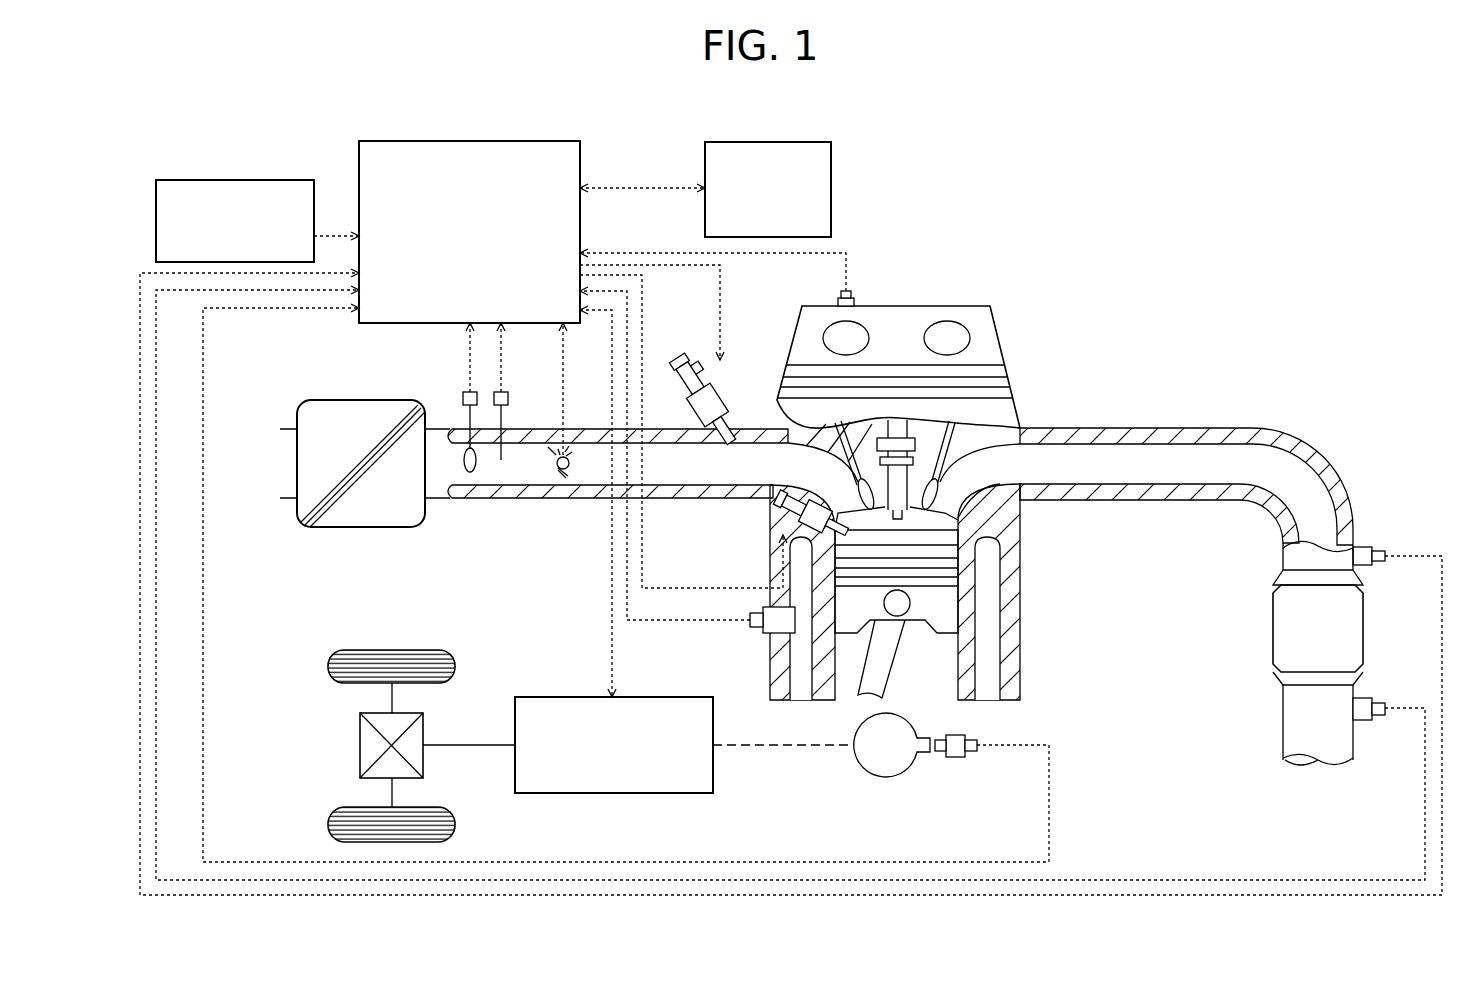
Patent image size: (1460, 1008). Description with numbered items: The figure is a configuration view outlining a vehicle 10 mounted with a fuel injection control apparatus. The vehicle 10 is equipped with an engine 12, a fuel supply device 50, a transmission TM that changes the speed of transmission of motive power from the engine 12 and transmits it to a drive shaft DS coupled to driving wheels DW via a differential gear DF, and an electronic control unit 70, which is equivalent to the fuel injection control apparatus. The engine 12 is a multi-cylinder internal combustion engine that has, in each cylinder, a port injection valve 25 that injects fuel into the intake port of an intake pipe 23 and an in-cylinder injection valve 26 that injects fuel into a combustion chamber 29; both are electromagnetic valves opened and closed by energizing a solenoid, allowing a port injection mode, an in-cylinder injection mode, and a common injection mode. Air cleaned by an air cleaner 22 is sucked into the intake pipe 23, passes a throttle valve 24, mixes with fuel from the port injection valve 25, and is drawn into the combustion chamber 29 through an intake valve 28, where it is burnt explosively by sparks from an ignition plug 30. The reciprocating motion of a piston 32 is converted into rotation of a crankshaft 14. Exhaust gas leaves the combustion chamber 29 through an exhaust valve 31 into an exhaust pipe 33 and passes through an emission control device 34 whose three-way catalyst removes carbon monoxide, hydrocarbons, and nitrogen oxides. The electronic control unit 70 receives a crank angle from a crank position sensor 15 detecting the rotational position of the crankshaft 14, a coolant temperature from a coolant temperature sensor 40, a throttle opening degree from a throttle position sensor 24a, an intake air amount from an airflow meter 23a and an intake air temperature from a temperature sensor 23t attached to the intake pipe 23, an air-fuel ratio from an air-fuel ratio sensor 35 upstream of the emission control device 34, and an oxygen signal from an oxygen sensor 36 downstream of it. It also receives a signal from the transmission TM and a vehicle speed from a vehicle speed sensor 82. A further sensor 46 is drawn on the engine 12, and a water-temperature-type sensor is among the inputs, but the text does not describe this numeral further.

The vehicle 10 is at (1188, 168).
The engine 12 is at (889, 473).
The crankshaft 14 is at (866, 766).
The crank position sensor 15 is at (956, 757).
The air cleaner 22 is at (360, 400).
The intake pipe 23 is at (470, 498).
The airflow meter 23a is at (462, 395).
The temperature sensor 23t is at (509, 395).
The throttle valve 24 is at (567, 455).
The throttle position sensor 24a is at (560, 472).
The port injection valve 25 is at (736, 402).
The in-cylinder injection valve 26 is at (778, 492).
The intake valve 28 is at (845, 490).
The combustion chamber 29 is at (905, 536).
The ignition plug 30 is at (946, 474).
The exhaust valve 31 is at (929, 527).
The piston 32 is at (941, 633).
The exhaust pipe 33 is at (1160, 428).
The emission control device 34 is at (1363, 636).
The air-fuel ratio sensor 35 is at (1365, 547).
The oxygen sensor 36 is at (1364, 720).
The coolant temperature sensor 40 is at (758, 633).
The water temperature sensor 46 is at (848, 297).
The fuel supply device 50 is at (831, 195).
The electronic control unit 70 is at (470, 141).
The vehicle speed sensor 82 is at (156, 232).
The driving wheels DW is at (328, 665).
The differential gear DF is at (360, 744).
The drive shaft DS is at (476, 745).
The transmission TM is at (571, 697).